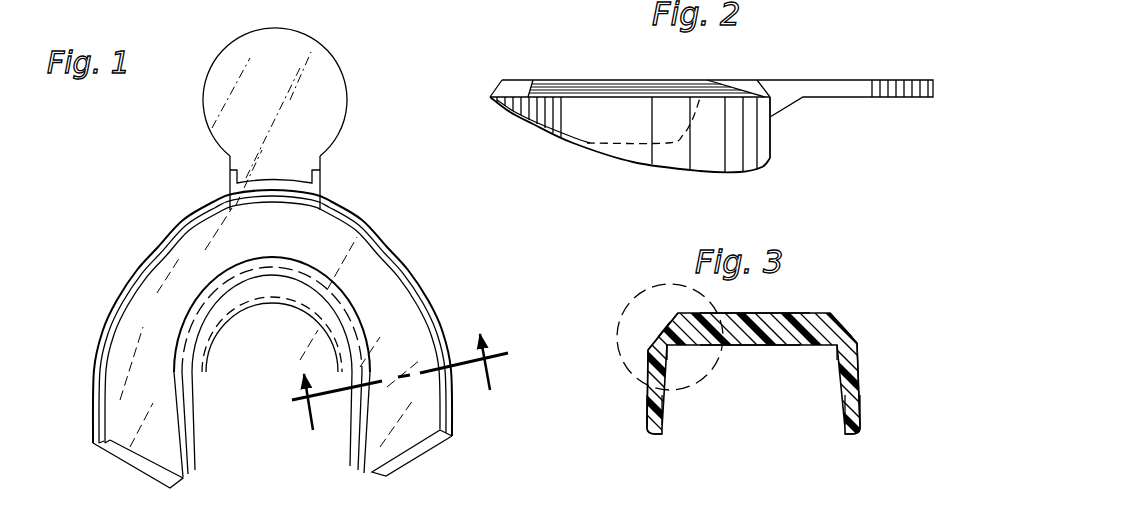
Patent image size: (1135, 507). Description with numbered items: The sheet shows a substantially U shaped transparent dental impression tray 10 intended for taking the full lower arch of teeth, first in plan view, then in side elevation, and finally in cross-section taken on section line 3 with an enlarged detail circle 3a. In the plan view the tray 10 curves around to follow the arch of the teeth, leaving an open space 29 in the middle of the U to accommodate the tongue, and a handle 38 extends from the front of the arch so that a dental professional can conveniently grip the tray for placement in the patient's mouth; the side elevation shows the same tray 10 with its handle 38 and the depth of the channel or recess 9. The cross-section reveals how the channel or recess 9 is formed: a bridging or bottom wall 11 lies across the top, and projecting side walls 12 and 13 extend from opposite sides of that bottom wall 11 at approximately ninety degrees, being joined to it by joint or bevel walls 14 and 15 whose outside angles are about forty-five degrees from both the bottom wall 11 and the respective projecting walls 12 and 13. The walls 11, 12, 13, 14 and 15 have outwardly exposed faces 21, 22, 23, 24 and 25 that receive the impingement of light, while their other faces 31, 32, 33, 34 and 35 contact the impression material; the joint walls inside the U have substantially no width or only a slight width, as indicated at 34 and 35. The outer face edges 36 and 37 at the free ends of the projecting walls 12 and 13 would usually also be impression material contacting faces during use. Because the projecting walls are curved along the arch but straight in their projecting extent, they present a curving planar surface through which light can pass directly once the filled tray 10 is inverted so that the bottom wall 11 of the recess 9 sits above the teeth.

In FIG. 1, the handle 38 is at (291, 56).
In FIG. 2, the handle 38 is at (860, 85).
In FIG. 1, the tray 10 is at (401, 236).
In FIG. 1, the space 29 is at (254, 446).
In FIG. 1, the channel or recess 9 is at (420, 445).
In FIG. 1, the section line 3 is at (400, 396).
In FIG. 2, the impression material contacting face 33 is at (519, 110).
In FIG. 3, the impression material contacting face 33 is at (664, 408).
In FIG. 2, the face 22 is at (711, 151).
In FIG. 3, the face 22 is at (863, 405).
In FIG. 3, the bottom wall 11 is at (807, 313).
In FIG. 3, the detail view circle 3a is at (646, 292).
In FIG. 3, the face 21 is at (739, 311).
In FIG. 3, the joint or bevel wall 14 is at (845, 330).
In FIG. 3, the face 24 is at (855, 328).
In FIG. 3, the joint or bevel wall 15 is at (670, 320).
In FIG. 3, the face 25 is at (660, 328).
In FIG. 3, the impression material contacting face 35 is at (669, 351).
In FIG. 3, the impression material contacting face 31 is at (740, 347).
In FIG. 3, the impression material contacting face 34 is at (835, 352).
In FIG. 3, the projecting side wall 13 is at (648, 367).
In FIG. 3, the projecting side wall 12 is at (858, 374).
In FIG. 3, the face 23 is at (645, 410).
In FIG. 3, the impression material contacting face 32 is at (841, 402).
In FIG. 3, the outer face edge 37 is at (653, 437).
In FIG. 3, the outer face edge 36 is at (850, 437).